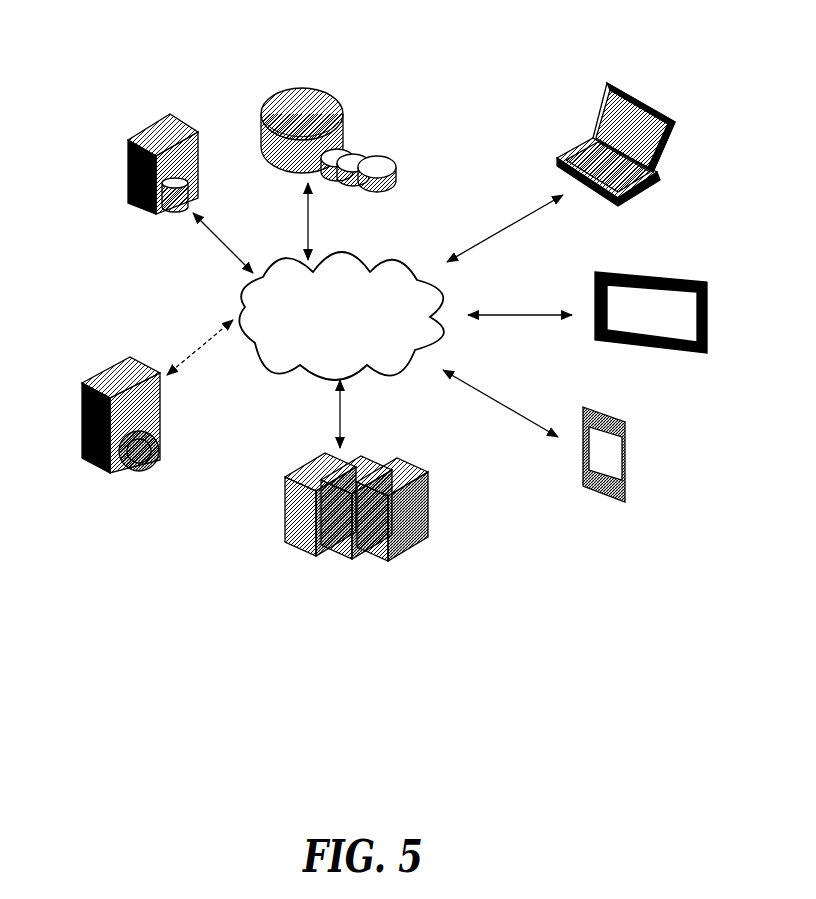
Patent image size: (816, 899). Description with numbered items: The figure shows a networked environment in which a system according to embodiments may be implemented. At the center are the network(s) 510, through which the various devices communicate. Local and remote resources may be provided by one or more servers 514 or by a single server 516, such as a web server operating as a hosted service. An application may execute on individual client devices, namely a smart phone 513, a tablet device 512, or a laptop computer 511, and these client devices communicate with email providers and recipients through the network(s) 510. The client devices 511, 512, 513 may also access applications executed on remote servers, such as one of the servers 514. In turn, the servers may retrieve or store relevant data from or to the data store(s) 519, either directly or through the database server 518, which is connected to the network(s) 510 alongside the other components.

The network(s) 510 is at (345, 246).
The laptop computer 511 is at (650, 84).
The tablet device 512 is at (682, 256).
The smart phone 513 is at (632, 420).
The servers 514 is at (310, 450).
The single server 516 is at (100, 364).
The database server 518 is at (163, 225).
The data store(s) 519 is at (318, 66).